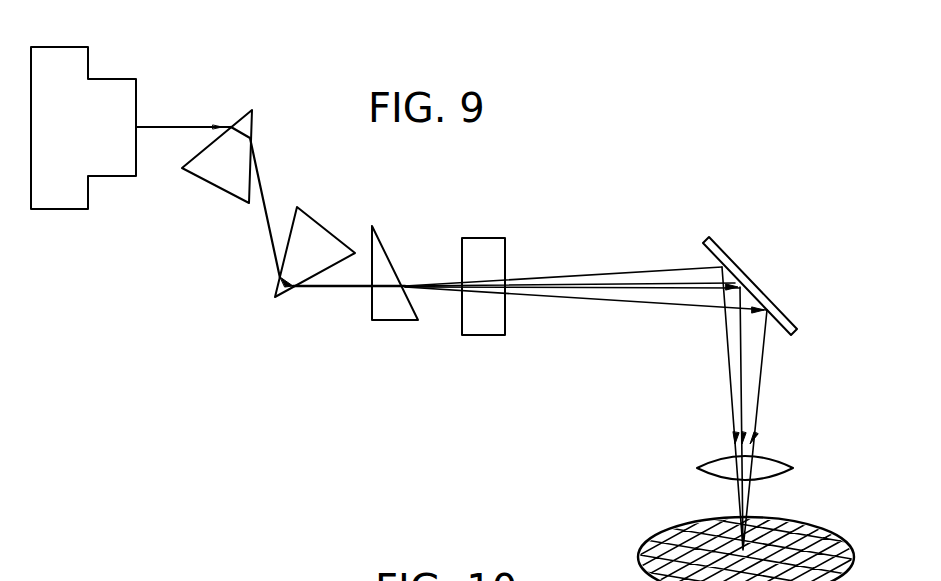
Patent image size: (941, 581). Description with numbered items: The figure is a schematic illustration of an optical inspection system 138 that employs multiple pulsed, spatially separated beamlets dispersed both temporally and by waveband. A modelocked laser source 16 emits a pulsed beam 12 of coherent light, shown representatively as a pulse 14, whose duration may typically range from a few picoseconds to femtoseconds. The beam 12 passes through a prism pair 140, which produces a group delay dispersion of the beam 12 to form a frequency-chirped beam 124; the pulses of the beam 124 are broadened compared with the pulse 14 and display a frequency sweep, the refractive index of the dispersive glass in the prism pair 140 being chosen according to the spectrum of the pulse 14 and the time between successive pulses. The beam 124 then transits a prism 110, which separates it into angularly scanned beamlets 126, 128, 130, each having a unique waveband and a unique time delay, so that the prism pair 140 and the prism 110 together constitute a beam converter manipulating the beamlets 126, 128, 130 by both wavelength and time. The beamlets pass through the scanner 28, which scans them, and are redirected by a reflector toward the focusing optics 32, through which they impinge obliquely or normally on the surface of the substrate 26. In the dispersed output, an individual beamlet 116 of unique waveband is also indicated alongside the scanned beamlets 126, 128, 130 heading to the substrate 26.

The pulsed beam 12 is at (162, 131).
The pulse 14 is at (190, 125).
The modelocked laser source 16 is at (67, 47).
The substrate 26 is at (833, 540).
The scanner 28 is at (470, 335).
The focusing optics 32 is at (698, 465).
The prism 110 is at (387, 257).
The beamlet 116 is at (765, 297).
The frequency-chirped beam 124 is at (328, 287).
The beamlet 126 is at (557, 275).
The beamlet 128 is at (658, 282).
The beamlet 130 is at (570, 300).
The optical inspection system 138 is at (665, 190).
The prism pair 140 is at (200, 345).